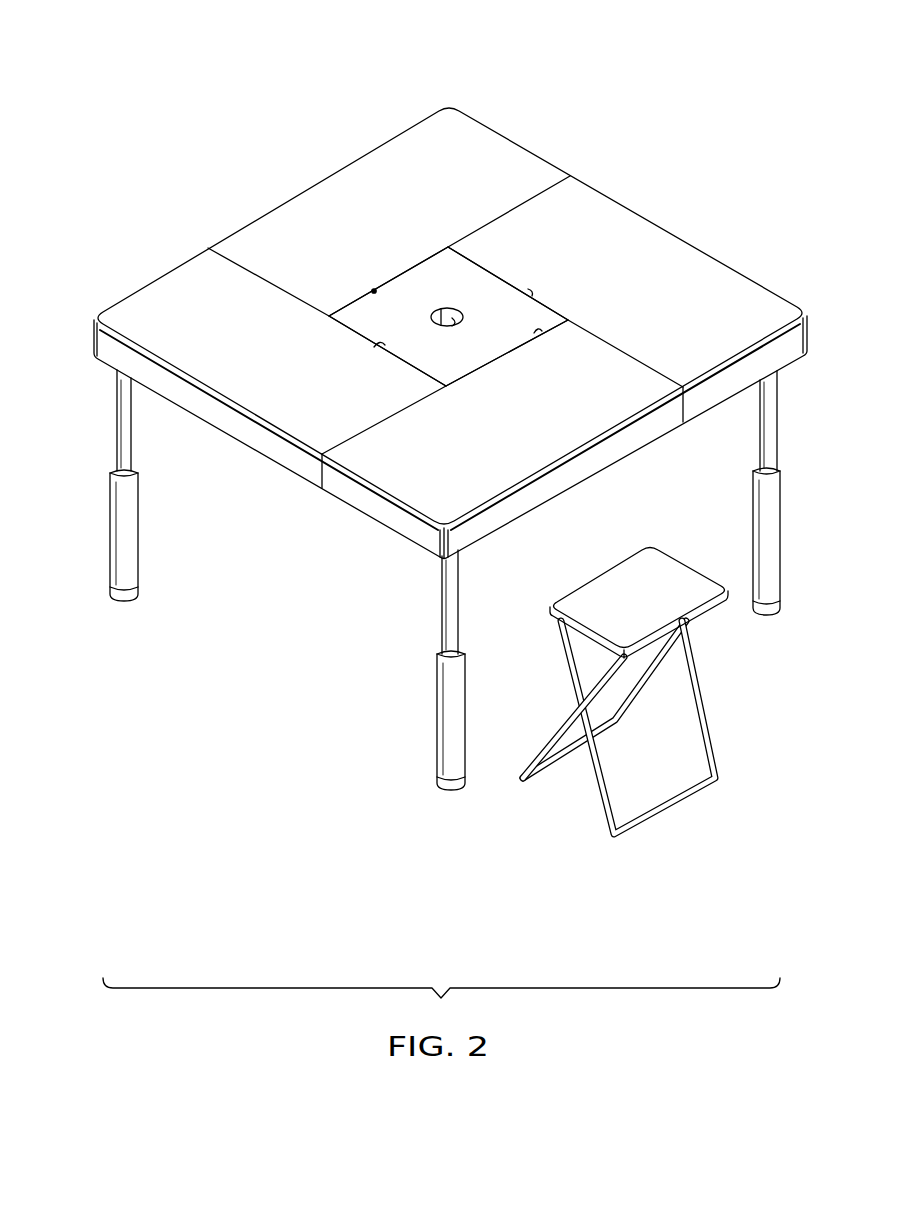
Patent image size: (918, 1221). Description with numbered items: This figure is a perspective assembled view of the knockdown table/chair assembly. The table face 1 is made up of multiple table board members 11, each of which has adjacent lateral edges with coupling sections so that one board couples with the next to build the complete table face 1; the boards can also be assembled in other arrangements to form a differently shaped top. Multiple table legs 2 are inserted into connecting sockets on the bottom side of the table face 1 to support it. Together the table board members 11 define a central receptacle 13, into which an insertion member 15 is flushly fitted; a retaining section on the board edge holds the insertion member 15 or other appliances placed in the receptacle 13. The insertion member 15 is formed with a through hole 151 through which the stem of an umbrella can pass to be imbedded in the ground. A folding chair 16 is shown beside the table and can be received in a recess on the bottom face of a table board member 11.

The table face 1 is at (526, 125).
The table leg 2 is at (117, 421).
The table board member 11 is at (200, 292).
The central receptacle 13 is at (380, 284).
The insertion member 15 is at (485, 283).
The through hole 151 is at (462, 322).
The folding chair 16 is at (610, 577).